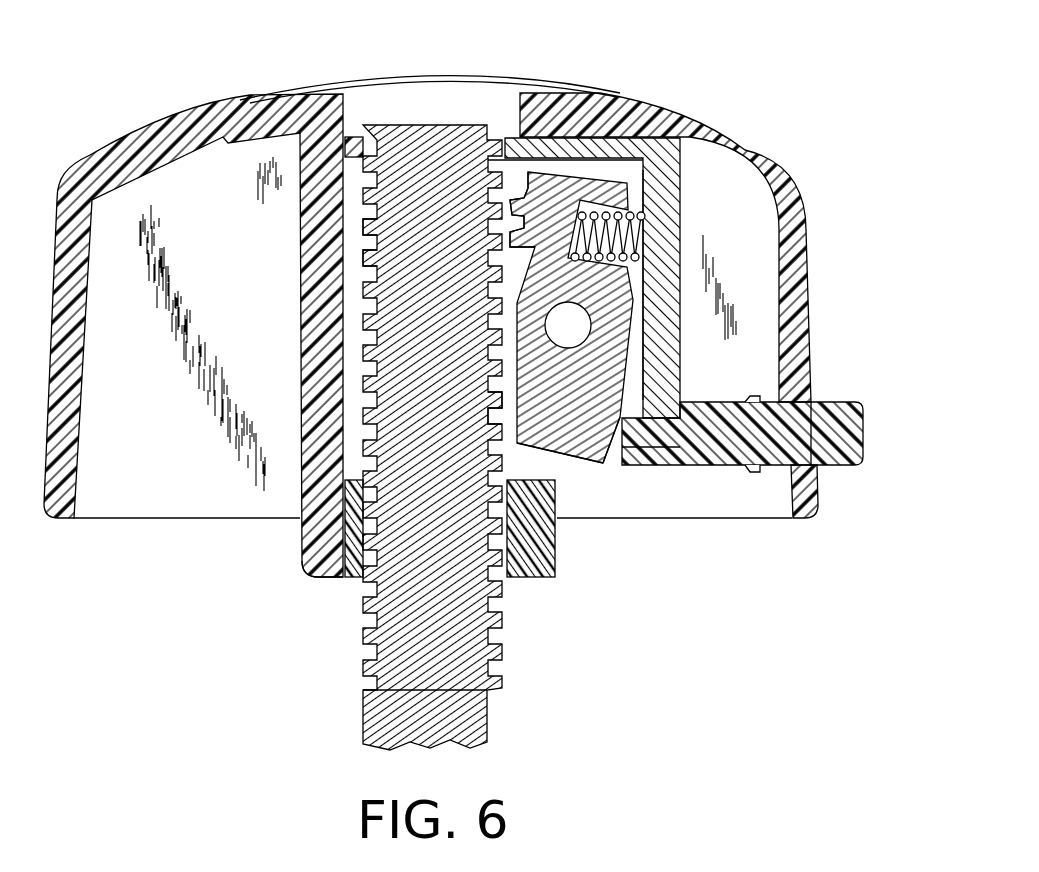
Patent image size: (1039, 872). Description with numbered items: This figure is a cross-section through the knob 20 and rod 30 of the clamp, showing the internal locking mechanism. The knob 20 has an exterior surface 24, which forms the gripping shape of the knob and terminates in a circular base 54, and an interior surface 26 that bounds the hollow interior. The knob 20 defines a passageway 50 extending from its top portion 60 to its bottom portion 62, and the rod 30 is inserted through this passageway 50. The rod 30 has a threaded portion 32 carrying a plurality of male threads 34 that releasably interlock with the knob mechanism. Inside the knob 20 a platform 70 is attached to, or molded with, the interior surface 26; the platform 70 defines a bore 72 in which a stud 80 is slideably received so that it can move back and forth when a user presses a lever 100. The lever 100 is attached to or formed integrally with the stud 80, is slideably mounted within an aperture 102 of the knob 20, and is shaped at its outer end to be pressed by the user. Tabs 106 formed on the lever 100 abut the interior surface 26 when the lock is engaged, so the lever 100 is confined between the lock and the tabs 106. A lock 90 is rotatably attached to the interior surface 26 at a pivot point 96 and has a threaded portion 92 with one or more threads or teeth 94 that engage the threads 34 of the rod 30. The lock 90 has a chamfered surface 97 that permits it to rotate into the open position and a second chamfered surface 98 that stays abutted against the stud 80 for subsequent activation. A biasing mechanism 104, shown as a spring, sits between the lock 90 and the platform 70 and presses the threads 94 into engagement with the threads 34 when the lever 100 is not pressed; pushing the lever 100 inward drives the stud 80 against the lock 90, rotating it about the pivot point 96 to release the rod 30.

The knob 20 is at (803, 189).
The exterior surface 24 is at (177, 132).
The interior surface 26 is at (73, 473).
The rod 30 is at (364, 718).
The threaded portion 32 is at (440, 125).
The male threads 34 is at (363, 258).
The passageway 50 is at (478, 108).
The circular base 54 is at (813, 492).
The top portion 60 is at (361, 78).
The bottom portion 62 is at (330, 578).
The platform 70 is at (668, 150).
The bore 72 is at (638, 448).
The stud 80 is at (628, 448).
The lock 90 is at (607, 285).
The threaded portion 92 is at (577, 196).
The threads or teeth 94 is at (540, 184).
The pivot point 96 is at (569, 331).
The chamfered surface 97 is at (518, 579).
The second chamfered surface 98 is at (612, 462).
The lever 100 is at (867, 433).
The aperture 102 is at (813, 468).
The biasing mechanism 104 is at (645, 226).
The tabs 106 is at (757, 398).